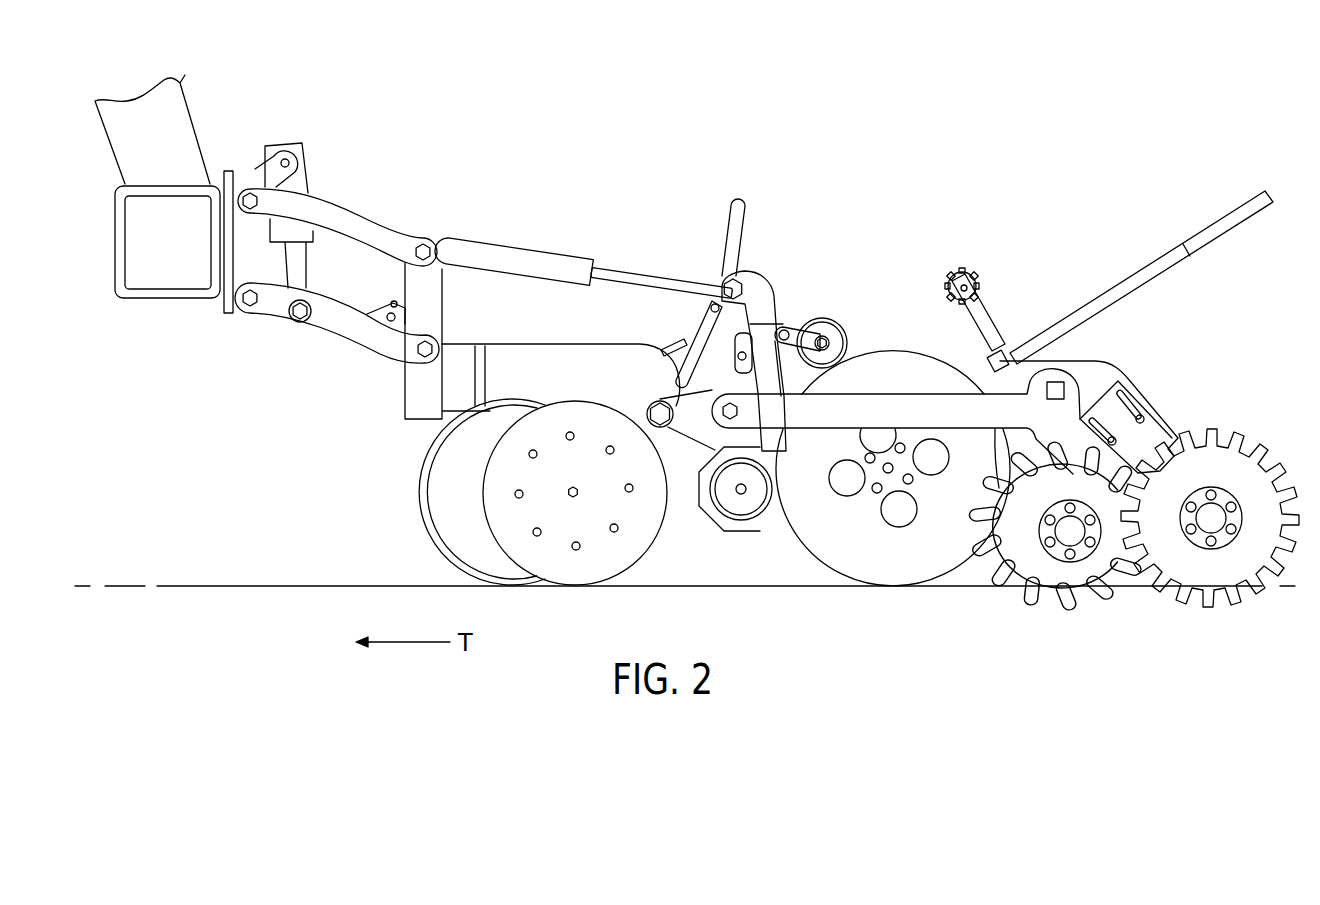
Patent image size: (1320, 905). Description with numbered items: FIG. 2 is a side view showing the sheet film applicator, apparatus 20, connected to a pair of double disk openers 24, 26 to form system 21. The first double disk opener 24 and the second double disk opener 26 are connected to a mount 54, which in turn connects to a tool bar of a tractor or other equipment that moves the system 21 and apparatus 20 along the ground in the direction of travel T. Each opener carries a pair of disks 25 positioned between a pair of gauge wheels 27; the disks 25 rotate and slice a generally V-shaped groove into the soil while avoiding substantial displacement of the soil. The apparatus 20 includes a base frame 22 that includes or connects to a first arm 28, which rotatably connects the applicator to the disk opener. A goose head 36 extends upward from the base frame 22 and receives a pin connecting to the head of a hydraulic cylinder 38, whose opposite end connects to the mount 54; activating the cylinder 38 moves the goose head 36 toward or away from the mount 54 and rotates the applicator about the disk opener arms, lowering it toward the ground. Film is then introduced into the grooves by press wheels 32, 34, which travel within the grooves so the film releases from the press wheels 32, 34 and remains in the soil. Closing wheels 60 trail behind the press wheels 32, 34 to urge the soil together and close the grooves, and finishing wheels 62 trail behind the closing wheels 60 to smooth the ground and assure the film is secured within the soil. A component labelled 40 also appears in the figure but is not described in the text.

The apparatus 20 is at (1048, 222).
The system 21 is at (953, 47).
The base frame 22 is at (995, 382).
The first double disk opener 24 is at (561, 301).
The disks 25 is at (440, 484).
The second double disk opener 26 is at (616, 328).
The gauge wheels 27 is at (578, 568).
The first arm 28 is at (797, 415).
The press wheel 32 is at (893, 502).
The press wheel 34 is at (897, 567).
The goose head 36 is at (772, 266).
The hydraulic cylinder 38 is at (552, 257).
The closing wheel adjustment assembly 40 is at (978, 277).
The mount 54 is at (349, 342).
The closing wheels 60 is at (1082, 567).
The finishing wheels 62 is at (1225, 570).